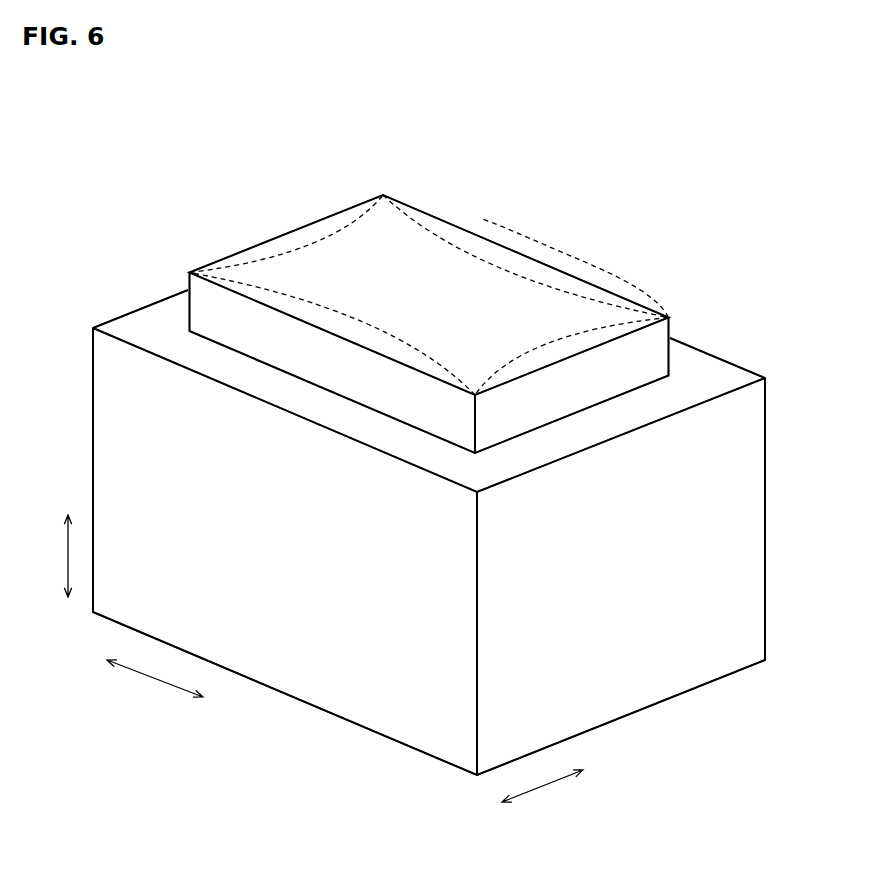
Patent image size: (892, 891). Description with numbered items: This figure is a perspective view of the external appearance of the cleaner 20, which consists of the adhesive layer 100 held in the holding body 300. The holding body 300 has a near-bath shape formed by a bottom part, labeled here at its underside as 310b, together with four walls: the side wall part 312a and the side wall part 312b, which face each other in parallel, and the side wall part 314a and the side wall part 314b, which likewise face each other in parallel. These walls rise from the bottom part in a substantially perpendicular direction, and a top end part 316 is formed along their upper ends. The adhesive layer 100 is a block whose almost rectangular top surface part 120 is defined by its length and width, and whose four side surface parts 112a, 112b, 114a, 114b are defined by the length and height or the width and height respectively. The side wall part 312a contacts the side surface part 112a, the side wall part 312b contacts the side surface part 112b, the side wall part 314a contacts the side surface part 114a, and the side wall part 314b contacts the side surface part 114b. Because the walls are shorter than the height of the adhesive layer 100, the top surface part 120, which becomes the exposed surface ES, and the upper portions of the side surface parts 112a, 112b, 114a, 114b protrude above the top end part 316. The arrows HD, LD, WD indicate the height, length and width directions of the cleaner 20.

The cleaner 20 is at (428, 148).
The adhesive layer 100 is at (445, 290).
The top surface part 120 is at (426, 280).
The exposed surface ES is at (547, 310).
The side surface part 112a is at (237, 327).
The side surface part 112b is at (650, 287).
The side surface part 114a is at (615, 382).
The side surface part 114b is at (288, 223).
The holding body 300 is at (115, 500).
The lower surface of light guide member 310b is at (403, 782).
The side wall part 312a is at (308, 648).
The side wall part 312b is at (790, 583).
The side wall part 314a is at (568, 680).
The side wall part 314b is at (163, 287).
The top end part 316 is at (140, 323).
The height direction HD is at (50, 556).
The length direction LD is at (155, 682).
The width direction WD is at (542, 796).